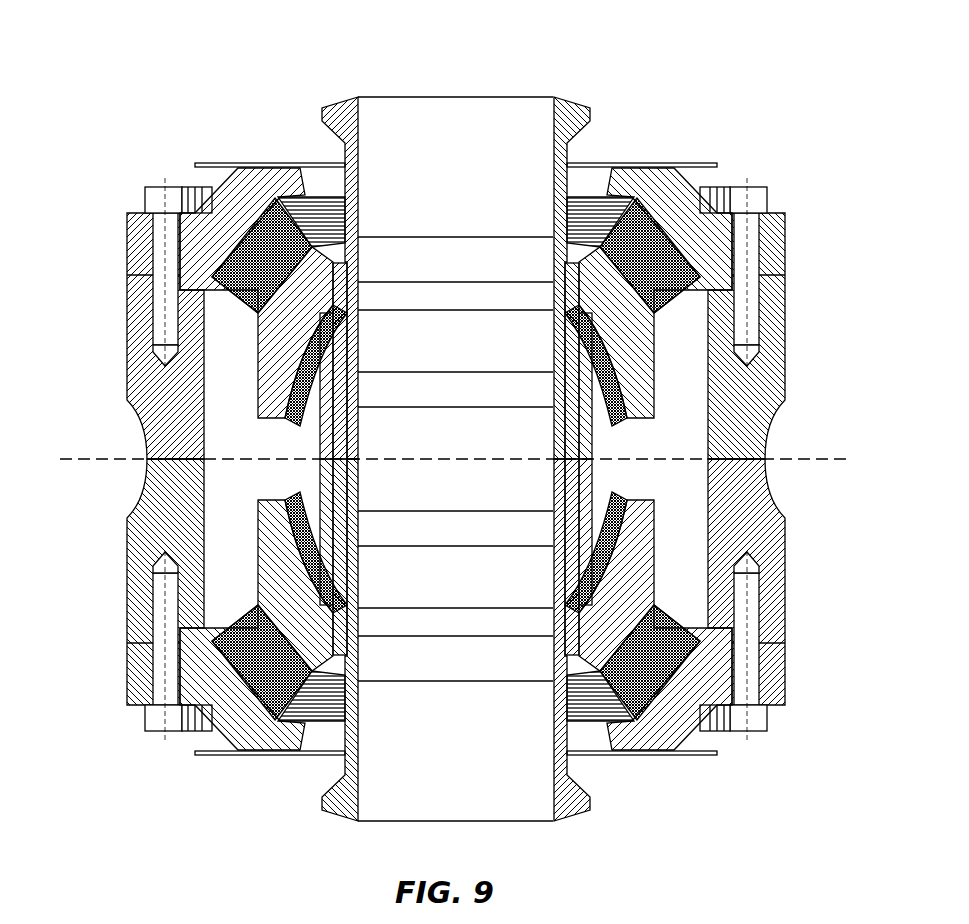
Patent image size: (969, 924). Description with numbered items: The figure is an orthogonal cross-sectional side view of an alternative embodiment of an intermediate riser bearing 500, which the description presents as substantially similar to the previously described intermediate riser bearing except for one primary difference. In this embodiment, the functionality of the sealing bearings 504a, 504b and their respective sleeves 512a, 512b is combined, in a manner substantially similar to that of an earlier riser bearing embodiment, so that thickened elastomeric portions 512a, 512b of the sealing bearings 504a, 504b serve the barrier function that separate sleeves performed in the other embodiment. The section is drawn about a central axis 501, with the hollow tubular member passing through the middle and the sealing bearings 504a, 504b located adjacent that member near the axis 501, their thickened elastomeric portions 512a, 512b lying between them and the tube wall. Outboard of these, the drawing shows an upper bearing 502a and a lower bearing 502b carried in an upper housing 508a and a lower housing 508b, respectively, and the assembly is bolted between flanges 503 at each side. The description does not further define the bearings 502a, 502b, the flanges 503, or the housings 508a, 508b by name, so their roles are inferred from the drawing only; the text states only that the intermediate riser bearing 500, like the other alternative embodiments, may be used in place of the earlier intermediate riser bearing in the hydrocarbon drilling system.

The intermediate riser bearing 500 is at (453, 420).
The central axis 501 is at (103, 458).
The upper outer tapered roller bearing 502a is at (669, 301).
The lower outer tapered roller bearing 502b is at (675, 612).
The flange 503 is at (738, 514).
The sealing bearing 504a is at (614, 424).
The sealing bearing 504b is at (620, 488).
The upper bearing housing 508a is at (640, 176).
The lower bearing housing 508b is at (652, 727).
The thickened elastomeric portion 512a is at (350, 337).
The thickened elastomeric portion 512b is at (350, 561).